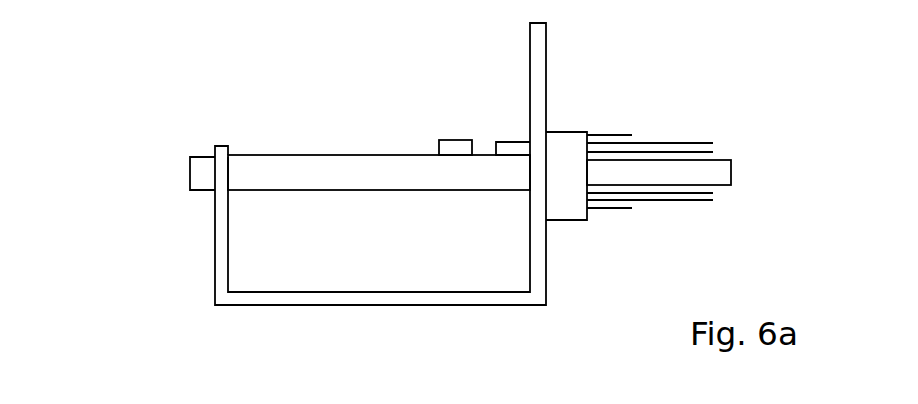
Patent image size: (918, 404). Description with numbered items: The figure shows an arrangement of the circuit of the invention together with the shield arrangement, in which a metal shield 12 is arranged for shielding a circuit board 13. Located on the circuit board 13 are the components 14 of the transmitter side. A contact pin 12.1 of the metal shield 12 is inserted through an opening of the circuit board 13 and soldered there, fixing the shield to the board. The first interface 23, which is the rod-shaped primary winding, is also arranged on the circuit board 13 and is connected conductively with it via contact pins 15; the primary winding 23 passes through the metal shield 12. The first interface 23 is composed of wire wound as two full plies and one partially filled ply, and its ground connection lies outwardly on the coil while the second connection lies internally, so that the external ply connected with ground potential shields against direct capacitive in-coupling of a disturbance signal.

The metal shield 12 is at (388, 300).
The contact pin 12.1 is at (212, 170).
The circuit board 13 is at (360, 165).
The components 14 is at (443, 138).
The contact pins 15 is at (513, 146).
The first interface 23 is at (657, 167).